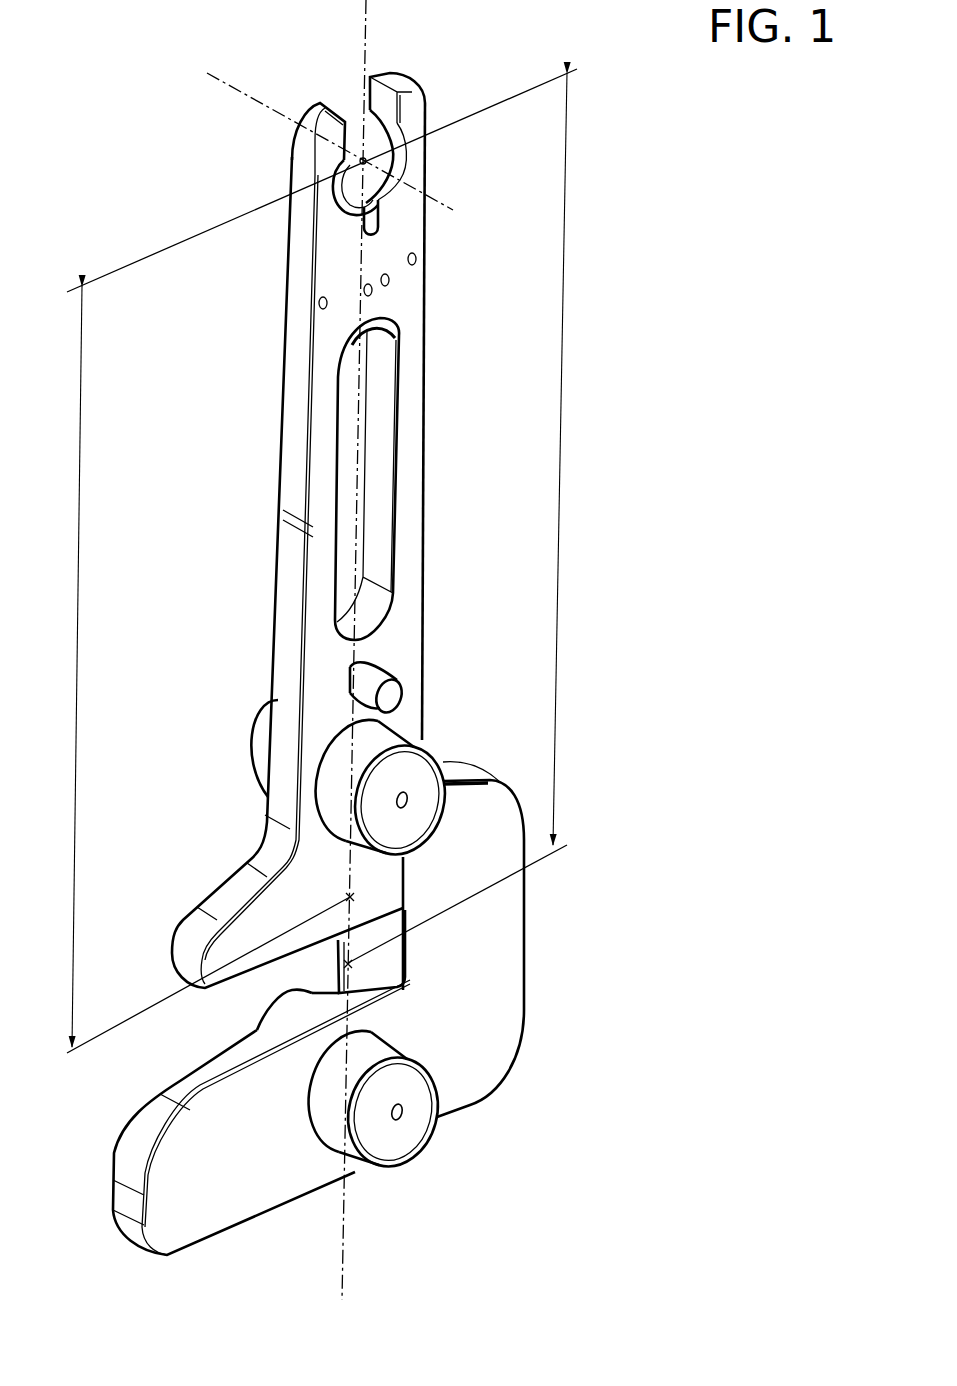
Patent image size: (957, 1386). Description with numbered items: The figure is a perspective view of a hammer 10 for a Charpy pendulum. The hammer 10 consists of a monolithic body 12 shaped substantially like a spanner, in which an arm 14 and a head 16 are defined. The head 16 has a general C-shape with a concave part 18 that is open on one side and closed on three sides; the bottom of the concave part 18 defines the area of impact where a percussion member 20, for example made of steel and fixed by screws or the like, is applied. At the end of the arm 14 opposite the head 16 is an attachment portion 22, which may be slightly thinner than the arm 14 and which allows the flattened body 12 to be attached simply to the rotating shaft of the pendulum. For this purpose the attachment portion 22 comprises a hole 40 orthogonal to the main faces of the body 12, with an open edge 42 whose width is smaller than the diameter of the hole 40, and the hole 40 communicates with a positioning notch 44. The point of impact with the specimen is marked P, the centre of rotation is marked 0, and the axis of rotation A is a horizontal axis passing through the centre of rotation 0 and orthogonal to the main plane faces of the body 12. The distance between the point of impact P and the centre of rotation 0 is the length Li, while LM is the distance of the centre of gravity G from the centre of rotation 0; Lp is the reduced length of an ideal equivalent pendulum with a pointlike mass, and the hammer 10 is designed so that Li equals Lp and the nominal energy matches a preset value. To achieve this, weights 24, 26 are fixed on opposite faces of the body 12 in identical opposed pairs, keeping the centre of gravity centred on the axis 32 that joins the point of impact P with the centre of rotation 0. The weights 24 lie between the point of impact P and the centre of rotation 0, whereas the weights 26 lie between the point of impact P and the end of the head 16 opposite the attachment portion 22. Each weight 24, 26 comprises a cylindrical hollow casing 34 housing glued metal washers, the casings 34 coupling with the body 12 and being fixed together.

The hammer 10 is at (654, 291).
The monolithic body 12 is at (437, 613).
The arm 14 is at (425, 400).
The head 16 is at (529, 935).
The concave part 18 is at (251, 975).
The percussion member 20 is at (392, 958).
The attachment portion 22 is at (417, 168).
The weights 24 is at (251, 713).
The weights 26 is at (262, 1015).
The axis 32 is at (357, 517).
The cylindrical hollow casing 34 is at (250, 750).
The hole 40 is at (378, 188).
The open edge 42 is at (378, 98).
The positioning notch 44 is at (380, 232).
The axis of rotation A is at (245, 94).
The centre of rotation 0 is at (356, 160).
The centre of gravity G is at (349, 897).
The point of impact P is at (349, 964).
The distance of the centre of gravity LM is at (53, 666).
The impact length Li is at (597, 459).
The reduced length Lp is at (514, 709).